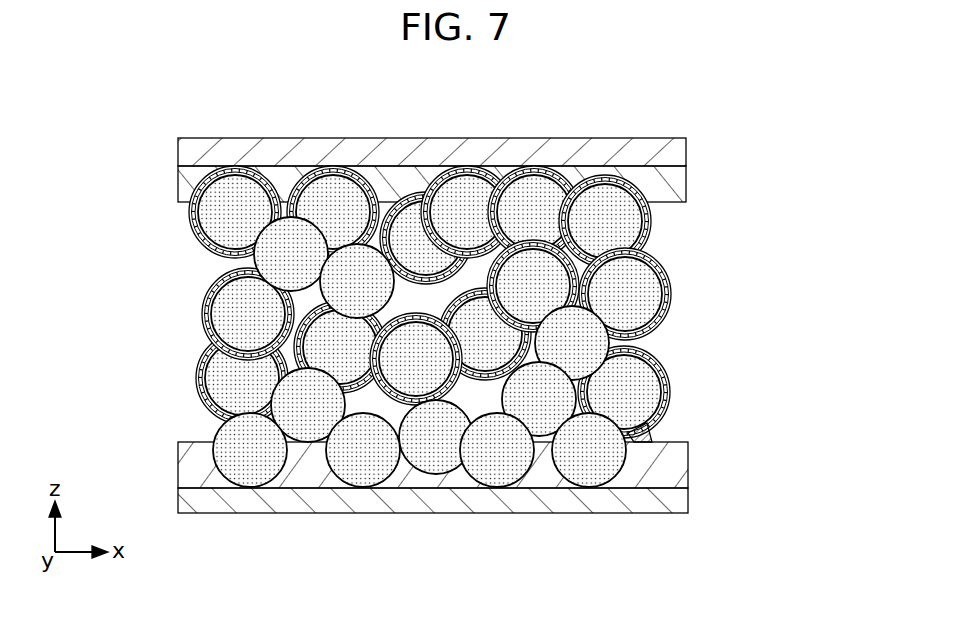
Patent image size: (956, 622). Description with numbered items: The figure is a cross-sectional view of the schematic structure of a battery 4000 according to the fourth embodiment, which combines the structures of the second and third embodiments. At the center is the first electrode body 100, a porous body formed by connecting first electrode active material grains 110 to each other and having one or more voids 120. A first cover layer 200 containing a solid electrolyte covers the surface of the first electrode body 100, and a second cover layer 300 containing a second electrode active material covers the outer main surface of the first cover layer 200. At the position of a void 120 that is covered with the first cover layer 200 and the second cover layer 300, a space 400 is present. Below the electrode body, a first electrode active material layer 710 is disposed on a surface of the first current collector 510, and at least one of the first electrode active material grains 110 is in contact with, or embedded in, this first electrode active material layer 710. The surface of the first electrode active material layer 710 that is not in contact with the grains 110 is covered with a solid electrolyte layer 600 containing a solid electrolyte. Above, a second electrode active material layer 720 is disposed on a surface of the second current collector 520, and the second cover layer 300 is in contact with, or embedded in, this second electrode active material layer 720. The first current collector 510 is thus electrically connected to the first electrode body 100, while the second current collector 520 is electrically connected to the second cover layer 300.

The battery 4000 is at (442, 93).
The second electrode active material layer 720 is at (190, 187).
The first electrode active material layer 710 is at (190, 467).
The second current collector 520 is at (678, 156).
The first current collector 510 is at (680, 507).
The first electrode body 100 is at (658, 218).
The first electrode active material grains 110 is at (696, 279).
The void 120 is at (697, 236).
The space 400 is at (699, 235).
The first cover layer 200 is at (690, 389).
The second cover layer 300 is at (690, 389).
The solid electrolyte layer 600 is at (677, 447).